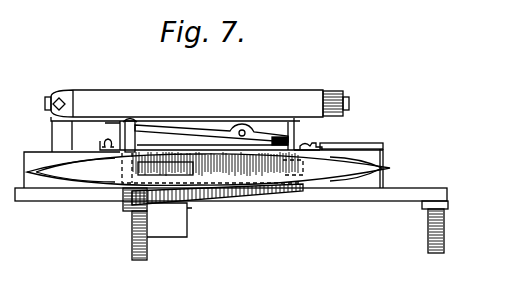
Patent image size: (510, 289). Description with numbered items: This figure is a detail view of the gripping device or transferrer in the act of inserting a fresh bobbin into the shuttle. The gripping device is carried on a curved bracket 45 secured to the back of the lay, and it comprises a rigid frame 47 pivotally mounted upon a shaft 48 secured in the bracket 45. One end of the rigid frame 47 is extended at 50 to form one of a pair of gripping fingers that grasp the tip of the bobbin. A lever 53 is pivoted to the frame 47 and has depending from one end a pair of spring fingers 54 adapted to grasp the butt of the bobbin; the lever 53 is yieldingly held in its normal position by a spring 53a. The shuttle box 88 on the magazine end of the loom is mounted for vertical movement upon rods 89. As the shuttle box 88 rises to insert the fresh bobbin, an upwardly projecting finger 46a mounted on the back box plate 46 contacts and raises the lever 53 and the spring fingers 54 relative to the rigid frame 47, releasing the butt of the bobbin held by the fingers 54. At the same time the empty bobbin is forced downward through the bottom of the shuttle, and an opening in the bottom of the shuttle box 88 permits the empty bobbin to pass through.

The curved bracket 45 is at (88, 94).
The back box plate 46 is at (380, 141).
The projecting finger 46a is at (105, 140).
The rigid frame 47 is at (200, 146).
The shaft 48 is at (348, 102).
The gripping finger 50 is at (314, 144).
The lever 53 is at (167, 125).
The spring 53a is at (282, 138).
The spring fingers 54 is at (122, 152).
The shuttle box 88 is at (397, 188).
The rods 89 is at (133, 231).